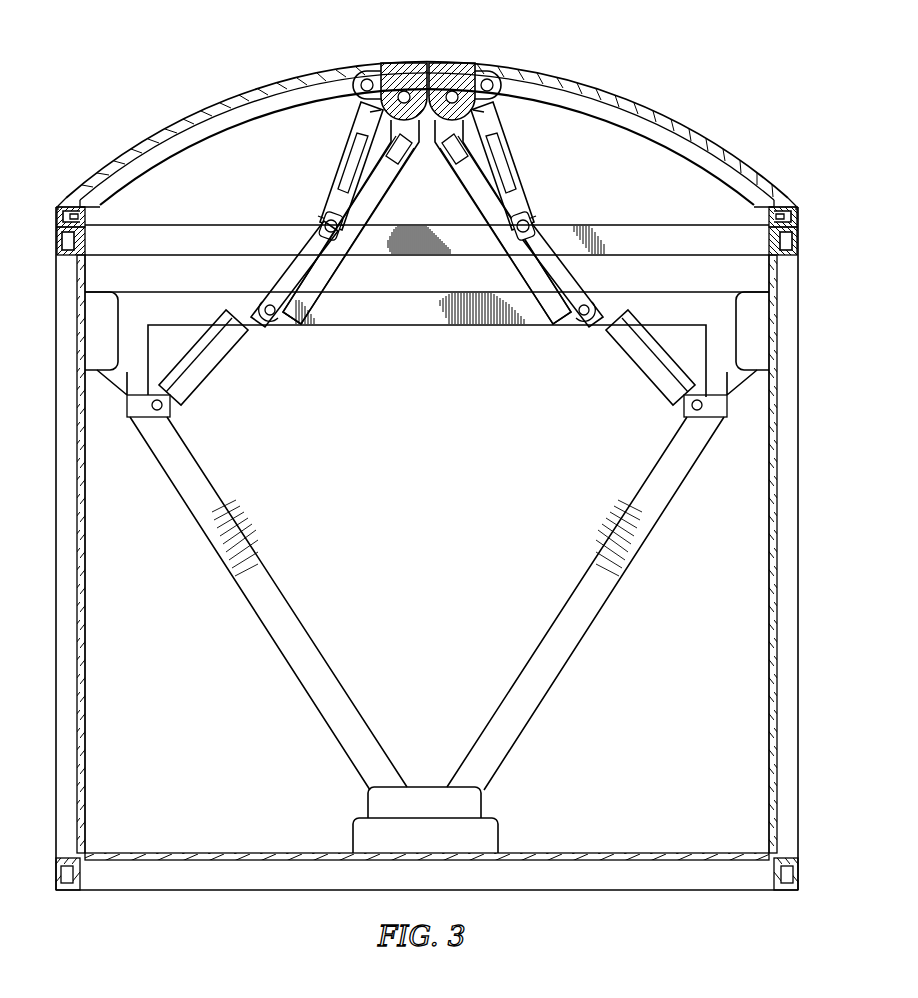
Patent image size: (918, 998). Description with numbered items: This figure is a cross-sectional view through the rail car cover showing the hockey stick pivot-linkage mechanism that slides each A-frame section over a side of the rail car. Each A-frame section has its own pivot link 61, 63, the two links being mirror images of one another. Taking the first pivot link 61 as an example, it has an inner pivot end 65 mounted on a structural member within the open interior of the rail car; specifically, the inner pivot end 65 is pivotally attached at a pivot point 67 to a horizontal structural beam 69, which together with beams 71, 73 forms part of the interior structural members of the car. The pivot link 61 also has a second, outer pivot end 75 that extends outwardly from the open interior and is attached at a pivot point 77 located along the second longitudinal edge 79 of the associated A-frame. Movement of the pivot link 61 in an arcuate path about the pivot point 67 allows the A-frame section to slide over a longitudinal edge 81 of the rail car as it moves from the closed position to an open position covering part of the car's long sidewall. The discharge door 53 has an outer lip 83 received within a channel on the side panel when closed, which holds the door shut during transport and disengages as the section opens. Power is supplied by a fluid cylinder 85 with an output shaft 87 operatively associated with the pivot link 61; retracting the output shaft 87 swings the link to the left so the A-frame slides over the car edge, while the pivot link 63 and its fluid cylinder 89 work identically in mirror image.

The discharge door 53 is at (206, 108).
The pivot link 61 is at (337, 176).
The pivot link 63 is at (516, 170).
The inner pivot end 65 is at (294, 320).
The pivot point 67 is at (268, 322).
The horizontal structural beam 69 is at (399, 318).
The beam 71 is at (266, 614).
The beam 73 is at (588, 614).
The outer pivot end 75 is at (414, 150).
The pivot point 77 is at (384, 108).
The second longitudinal edge 79 is at (390, 66).
The longitudinal edge 81 is at (57, 248).
The outer lip 83 is at (59, 213).
The fluid cylinder 85 is at (206, 387).
The output shaft 87 is at (296, 238).
The fluid cylinder 89 is at (648, 385).